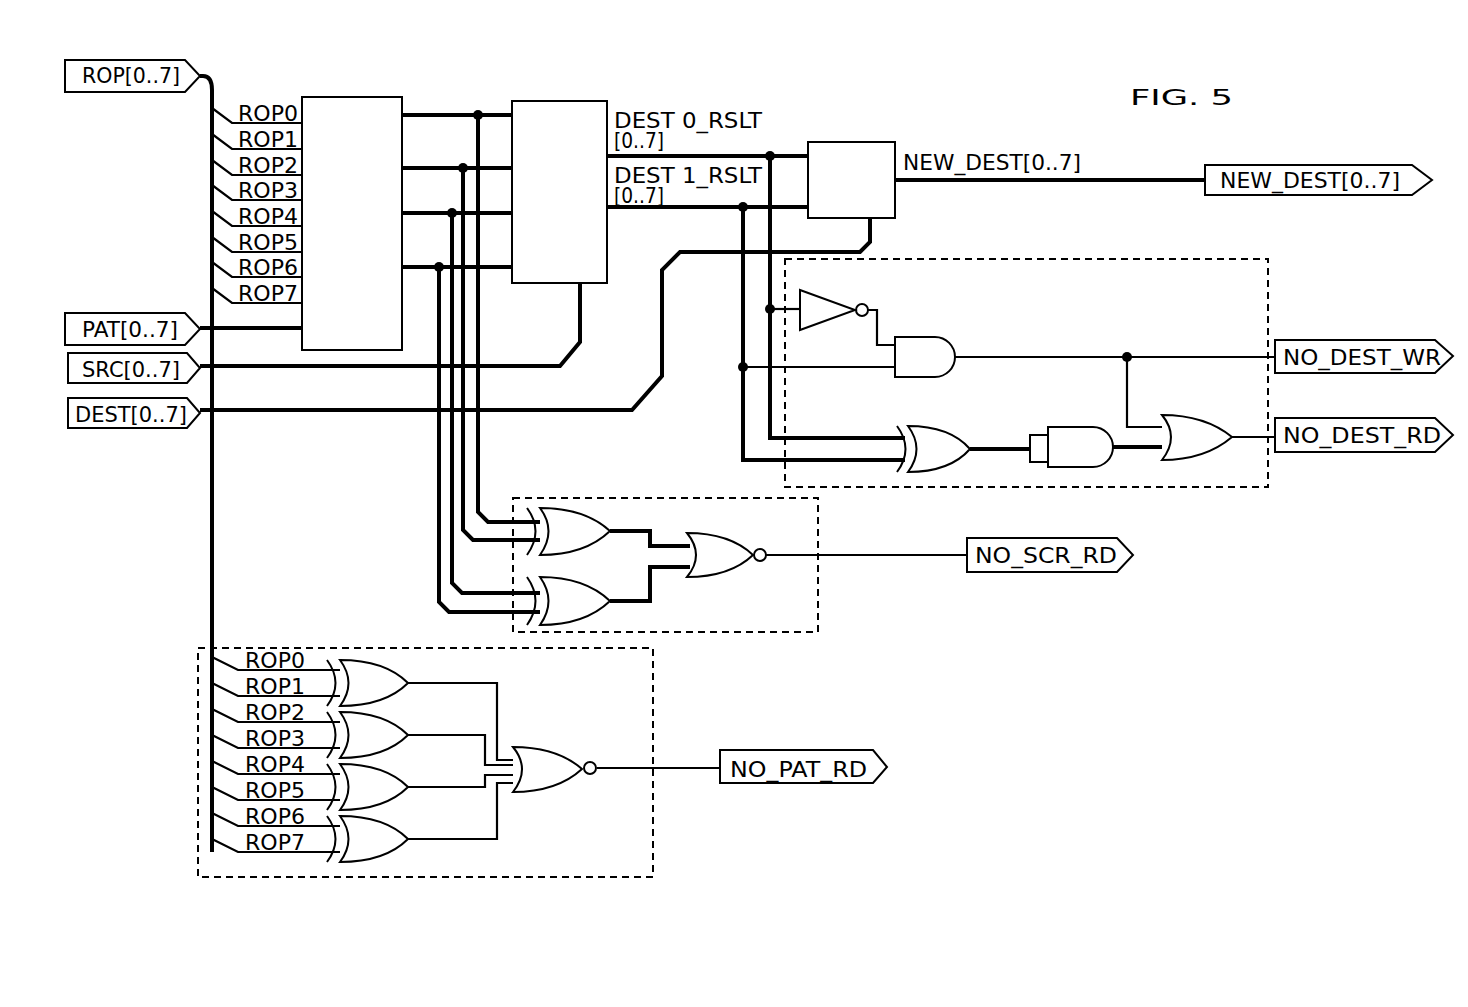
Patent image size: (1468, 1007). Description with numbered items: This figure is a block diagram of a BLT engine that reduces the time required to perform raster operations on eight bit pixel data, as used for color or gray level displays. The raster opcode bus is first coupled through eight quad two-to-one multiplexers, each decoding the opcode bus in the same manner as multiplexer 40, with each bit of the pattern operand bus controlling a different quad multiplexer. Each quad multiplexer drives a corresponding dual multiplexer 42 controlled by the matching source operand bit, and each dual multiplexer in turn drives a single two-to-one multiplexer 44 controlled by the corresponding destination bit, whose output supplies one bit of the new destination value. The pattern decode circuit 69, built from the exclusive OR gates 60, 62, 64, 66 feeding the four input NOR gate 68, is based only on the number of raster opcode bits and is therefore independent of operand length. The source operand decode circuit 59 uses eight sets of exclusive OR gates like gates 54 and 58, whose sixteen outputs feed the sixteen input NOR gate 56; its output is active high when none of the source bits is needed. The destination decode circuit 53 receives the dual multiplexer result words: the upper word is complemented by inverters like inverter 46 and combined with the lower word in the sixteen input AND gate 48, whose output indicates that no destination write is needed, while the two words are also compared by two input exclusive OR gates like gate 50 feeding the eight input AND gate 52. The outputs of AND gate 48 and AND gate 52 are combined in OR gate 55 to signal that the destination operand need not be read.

The quad 2:1 multiplexer 40 is at (302, 336).
The dual multiplexer 42 is at (528, 283).
The multiplexer 44 is at (895, 190).
The inverter 46 is at (823, 327).
The sixteen input AND gate 48 is at (955, 340).
The two input exclusive OR gate 50 is at (945, 465).
The eight input AND gate 52 is at (1075, 467).
The destination decode circuit 53 is at (1270, 302).
The exclusive OR gate 54 is at (577, 508).
The OR gate 55 is at (1190, 455).
The NOR gate 56 is at (727, 537).
The exclusive OR gate 58 is at (578, 578).
The source operand decode circuit 59 is at (820, 580).
The XOR gate 60 is at (388, 662).
The XOR gate 62 is at (395, 718).
The XOR gate 64 is at (395, 768).
The XOR gate 66 is at (395, 820).
The 4 input NOR gate 68 is at (540, 747).
The pattern decode circuit 69 is at (655, 850).